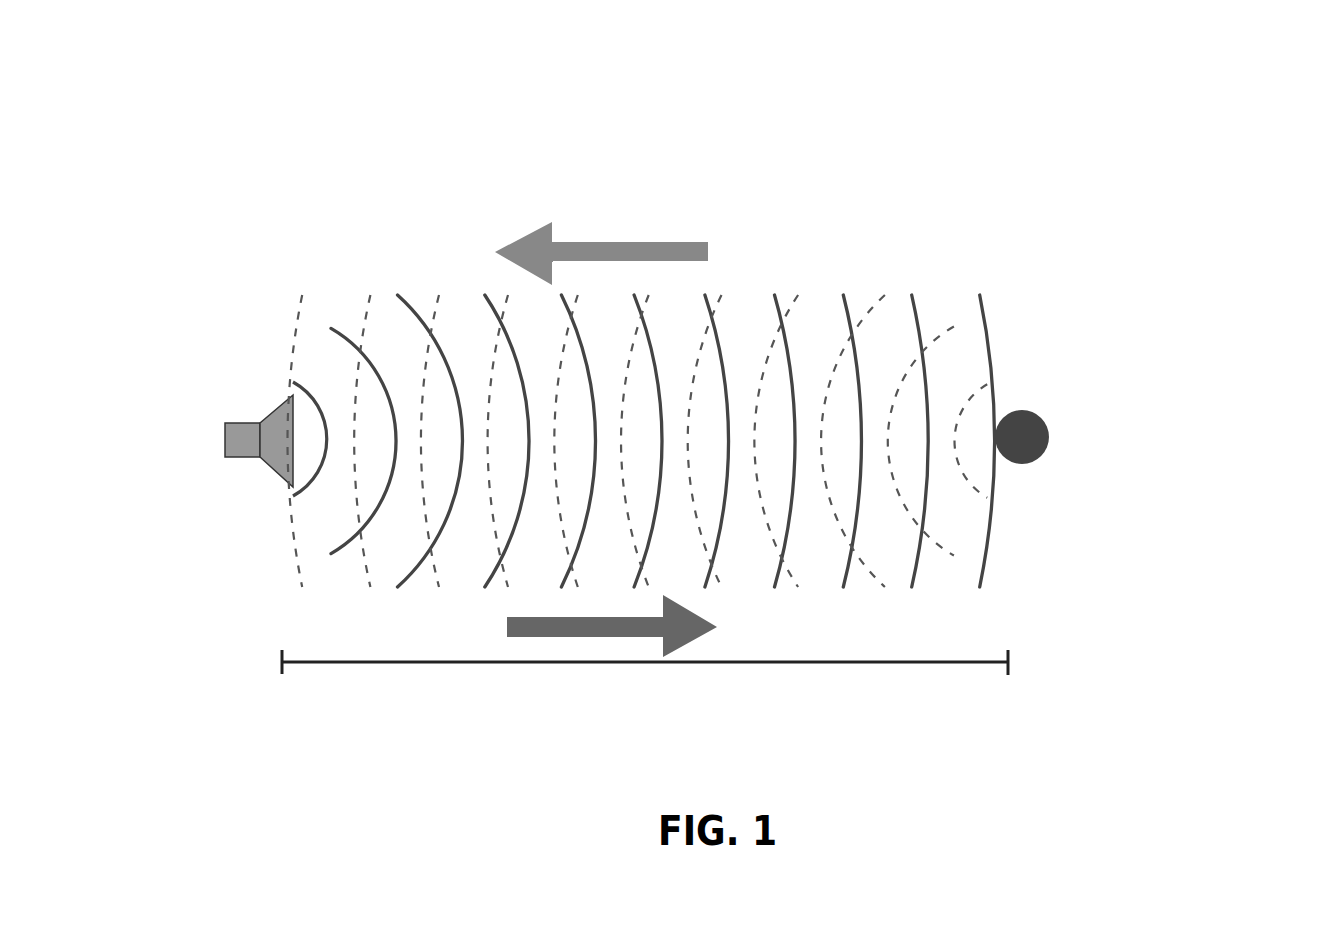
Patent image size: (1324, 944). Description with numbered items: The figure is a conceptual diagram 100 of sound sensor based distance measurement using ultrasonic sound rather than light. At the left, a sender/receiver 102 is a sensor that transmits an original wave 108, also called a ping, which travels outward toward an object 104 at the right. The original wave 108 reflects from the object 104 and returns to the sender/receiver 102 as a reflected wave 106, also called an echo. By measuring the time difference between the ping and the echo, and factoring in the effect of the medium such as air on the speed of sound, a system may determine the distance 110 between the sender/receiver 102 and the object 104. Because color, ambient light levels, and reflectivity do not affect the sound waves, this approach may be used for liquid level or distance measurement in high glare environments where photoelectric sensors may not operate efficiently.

The diagram 100 is at (1177, 105).
The sender/receiver 102 is at (242, 405).
The object 104 is at (1040, 405).
The reflected wave 106 is at (295, 298).
The original wave 108 is at (985, 298).
The distance 110 is at (320, 638).